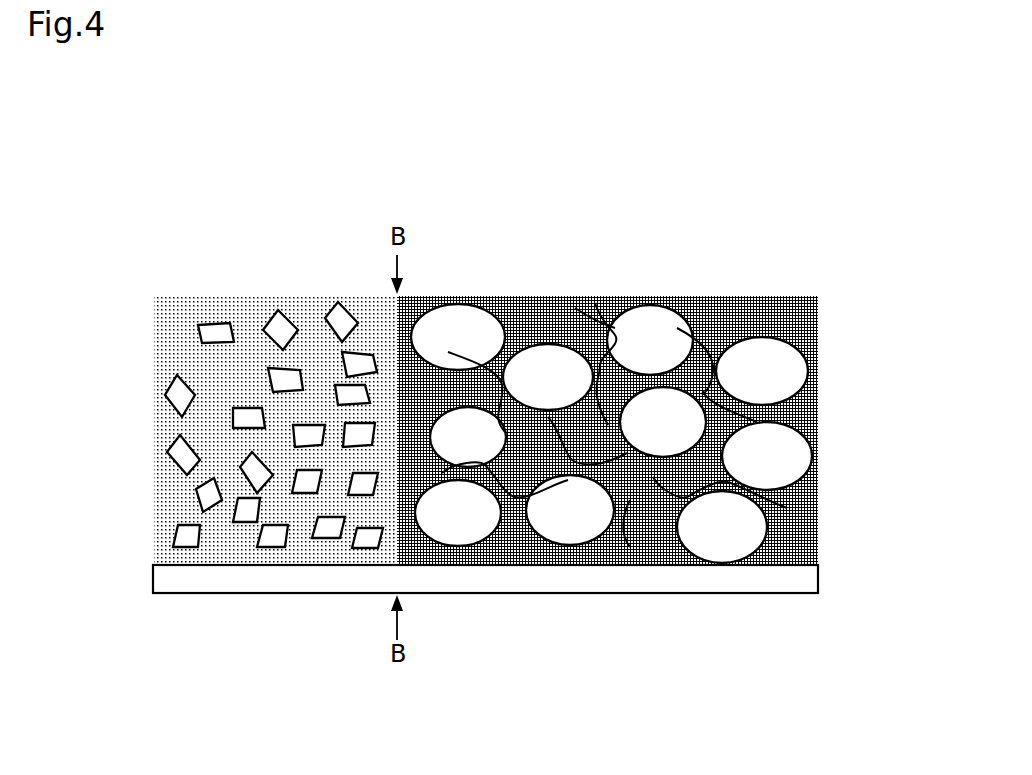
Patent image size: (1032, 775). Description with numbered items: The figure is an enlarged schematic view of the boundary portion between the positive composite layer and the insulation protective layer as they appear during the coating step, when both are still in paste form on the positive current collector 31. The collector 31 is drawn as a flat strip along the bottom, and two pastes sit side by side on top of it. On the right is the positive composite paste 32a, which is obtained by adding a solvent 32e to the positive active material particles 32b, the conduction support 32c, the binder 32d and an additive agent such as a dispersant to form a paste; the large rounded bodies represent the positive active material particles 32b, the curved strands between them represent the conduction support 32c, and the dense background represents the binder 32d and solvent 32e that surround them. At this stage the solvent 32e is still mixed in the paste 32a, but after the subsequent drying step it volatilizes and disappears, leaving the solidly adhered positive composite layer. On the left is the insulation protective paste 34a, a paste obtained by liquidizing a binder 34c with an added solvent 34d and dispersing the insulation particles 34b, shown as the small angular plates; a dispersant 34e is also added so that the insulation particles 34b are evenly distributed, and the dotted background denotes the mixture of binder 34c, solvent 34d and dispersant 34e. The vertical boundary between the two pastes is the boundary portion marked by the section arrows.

The positive current collector 31 is at (282, 588).
The positive composite paste 32a is at (652, 389).
The positive active material particles 32b is at (477, 318).
The conduction support 32c is at (595, 303).
The binder 32d is at (607, 388).
The solvent 32e is at (522, 303).
The insulation protective paste 34a is at (230, 391).
The insulation particles 34b is at (274, 398).
The binder 34c is at (275, 391).
The solvent 34d is at (275, 430).
The dispersant 34e is at (248, 303).